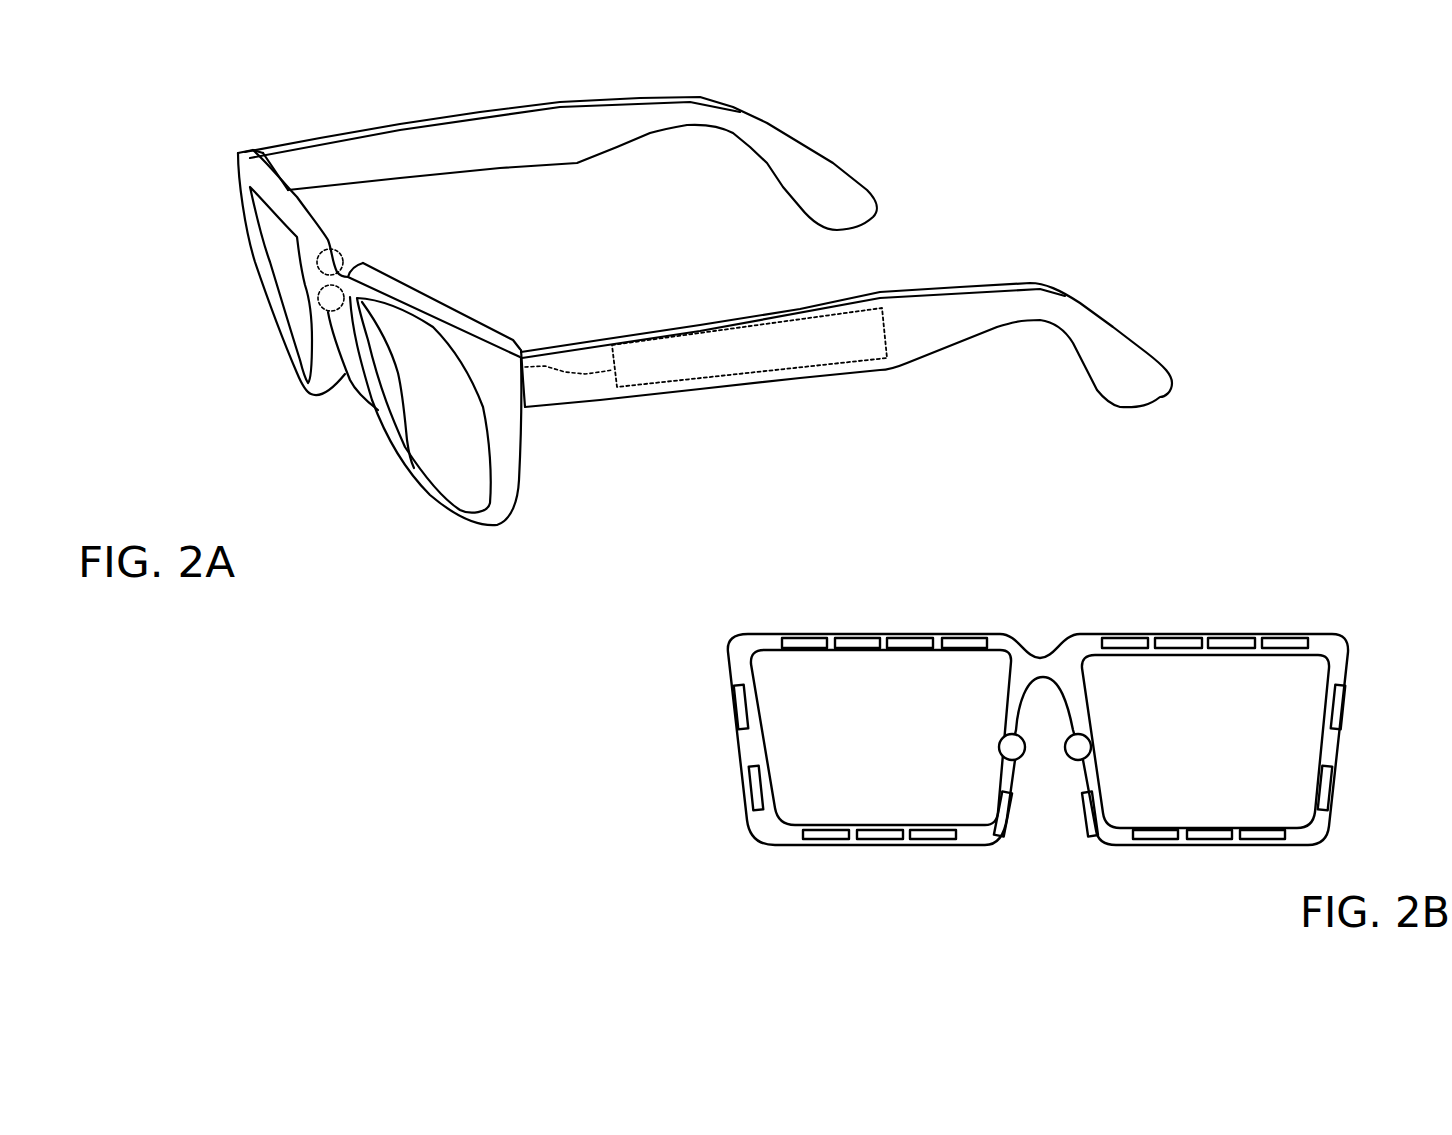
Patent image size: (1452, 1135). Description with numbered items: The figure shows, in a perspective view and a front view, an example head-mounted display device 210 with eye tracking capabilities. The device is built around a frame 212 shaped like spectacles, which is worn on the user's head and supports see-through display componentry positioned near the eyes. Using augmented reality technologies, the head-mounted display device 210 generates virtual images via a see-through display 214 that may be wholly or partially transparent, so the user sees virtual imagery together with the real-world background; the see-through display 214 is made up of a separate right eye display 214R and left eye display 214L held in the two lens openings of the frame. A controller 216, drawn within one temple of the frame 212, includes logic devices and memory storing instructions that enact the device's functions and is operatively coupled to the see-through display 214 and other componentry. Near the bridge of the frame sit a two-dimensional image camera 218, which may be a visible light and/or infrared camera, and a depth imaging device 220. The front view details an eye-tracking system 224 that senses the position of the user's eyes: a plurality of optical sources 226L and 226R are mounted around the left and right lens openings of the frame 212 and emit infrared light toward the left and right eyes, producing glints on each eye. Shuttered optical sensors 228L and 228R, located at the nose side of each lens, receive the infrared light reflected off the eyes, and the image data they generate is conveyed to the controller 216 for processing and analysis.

In FIG. 2A, the head-mounted display device 210 is at (223, 105).
In FIG. 2B, the head-mounted display device 210 is at (720, 548).
In FIG. 2A, the frame 212 is at (498, 153).
In FIG. 2B, the frame 212 is at (733, 639).
In FIG. 2A, the see-through display 214 is at (250, 360).
In FIG. 2A, the left eye display 214L is at (440, 463).
In FIG. 2B, the left eye display 214L is at (896, 701).
In FIG. 2A, the right eye display 214R is at (298, 302).
In FIG. 2B, the right eye display 214R is at (1230, 701).
In FIG. 2A, the controller 216 is at (770, 360).
In FIG. 2A, the two-dimensional image camera 218 is at (330, 264).
In FIG. 2A, the depth imaging device 220 is at (329, 298).
In FIG. 2B, the eye-tracking system 224 is at (1110, 566).
In FIG. 2B, the optical sources 226L is at (956, 632).
In FIG. 2B, the optical sources 226R is at (1278, 629).
In FIG. 2B, the shuttered optical sensor 228L is at (999, 745).
In FIG. 2B, the shuttered optical sensor 228R is at (1091, 747).